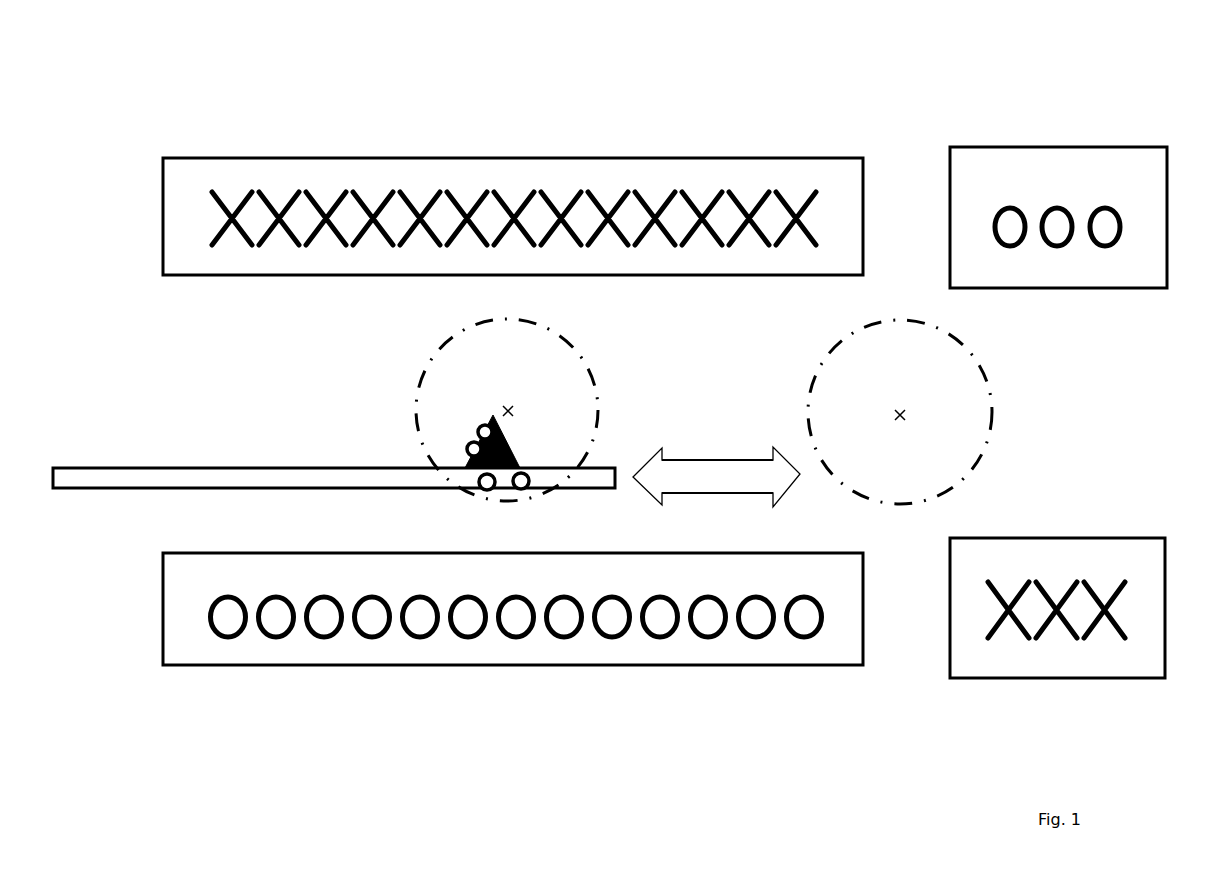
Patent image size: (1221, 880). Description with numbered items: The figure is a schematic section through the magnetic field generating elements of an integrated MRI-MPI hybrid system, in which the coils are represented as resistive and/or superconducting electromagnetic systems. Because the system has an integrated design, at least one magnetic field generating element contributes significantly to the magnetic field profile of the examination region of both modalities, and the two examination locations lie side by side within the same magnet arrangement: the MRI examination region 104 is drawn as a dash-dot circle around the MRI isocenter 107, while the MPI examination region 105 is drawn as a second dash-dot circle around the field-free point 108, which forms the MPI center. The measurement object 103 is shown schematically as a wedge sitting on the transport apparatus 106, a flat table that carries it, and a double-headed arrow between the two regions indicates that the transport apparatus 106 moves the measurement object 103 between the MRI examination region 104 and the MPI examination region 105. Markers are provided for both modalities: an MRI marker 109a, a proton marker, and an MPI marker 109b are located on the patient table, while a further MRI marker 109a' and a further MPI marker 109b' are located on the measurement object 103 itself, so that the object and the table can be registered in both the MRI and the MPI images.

The measurement object 103 is at (518, 448).
The MRI examination region 104 is at (543, 327).
The MPI examination region 105 is at (967, 350).
The transport apparatus 106 is at (190, 475).
The MRI isocenter 107 is at (513, 420).
The field-free point 108 is at (900, 415).
The MRI marker on the patient table 109a is at (394, 504).
The MPI marker on the patient table 109b is at (622, 506).
The MRI marker on the measurement object 109a' is at (404, 394).
The MPI marker on the measurement object 109b' is at (445, 369).